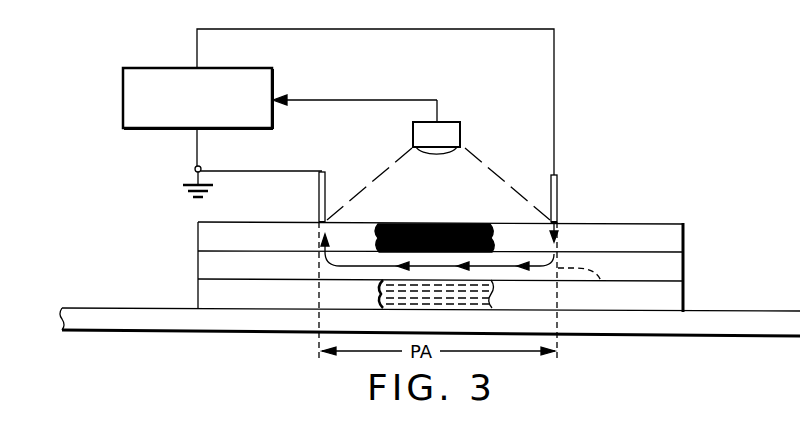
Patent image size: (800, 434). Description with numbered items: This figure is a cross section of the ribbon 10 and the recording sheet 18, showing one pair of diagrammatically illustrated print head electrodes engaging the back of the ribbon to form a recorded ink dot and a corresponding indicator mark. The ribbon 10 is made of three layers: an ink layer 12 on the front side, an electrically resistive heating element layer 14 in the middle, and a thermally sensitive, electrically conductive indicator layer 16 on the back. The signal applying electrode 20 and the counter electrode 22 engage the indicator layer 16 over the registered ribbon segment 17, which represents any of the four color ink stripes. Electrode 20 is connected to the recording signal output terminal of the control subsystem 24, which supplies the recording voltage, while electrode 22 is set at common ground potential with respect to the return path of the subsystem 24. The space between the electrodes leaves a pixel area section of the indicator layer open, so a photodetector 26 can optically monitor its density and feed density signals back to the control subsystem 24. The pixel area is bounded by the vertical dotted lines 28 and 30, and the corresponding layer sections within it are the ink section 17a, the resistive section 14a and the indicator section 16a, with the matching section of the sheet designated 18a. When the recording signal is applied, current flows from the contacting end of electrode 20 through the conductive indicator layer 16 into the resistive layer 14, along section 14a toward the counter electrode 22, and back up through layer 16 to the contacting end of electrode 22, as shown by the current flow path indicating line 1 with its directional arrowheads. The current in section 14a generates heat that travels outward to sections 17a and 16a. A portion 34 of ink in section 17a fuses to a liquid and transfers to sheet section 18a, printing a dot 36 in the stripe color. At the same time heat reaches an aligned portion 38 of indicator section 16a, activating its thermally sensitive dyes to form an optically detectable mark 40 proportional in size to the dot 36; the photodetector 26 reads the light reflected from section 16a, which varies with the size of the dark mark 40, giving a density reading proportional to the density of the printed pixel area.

The ribbon 10 is at (128, 248).
The ink layer 12 is at (702, 298).
The electrically resistive heating element layer 14 is at (200, 265).
The resistive layer section 14a is at (321, 265).
The indicator layer 16 is at (200, 237).
The indicator layer section 16a is at (321, 237).
The registered ribbon segment 17 is at (200, 294).
The ink layer section 17a is at (321, 294).
The recording sheet 18 is at (190, 322).
The recording sheet section 18a is at (545, 322).
The signal applying electrode 20 is at (557, 186).
The counter electrode 22 is at (319, 185).
The control subsystem 24 is at (272, 75).
The photodetector 26 is at (447, 122).
The vertical dotted line 28 is at (317, 321).
The vertical dotted line 30 is at (586, 292).
The fused ink portion 34 is at (464, 308).
The dot 36 is at (396, 305).
The heated indicator portion 38 is at (496, 234).
The indicator mark 40 is at (419, 223).
The current flow path indicating line 1 is at (503, 266).